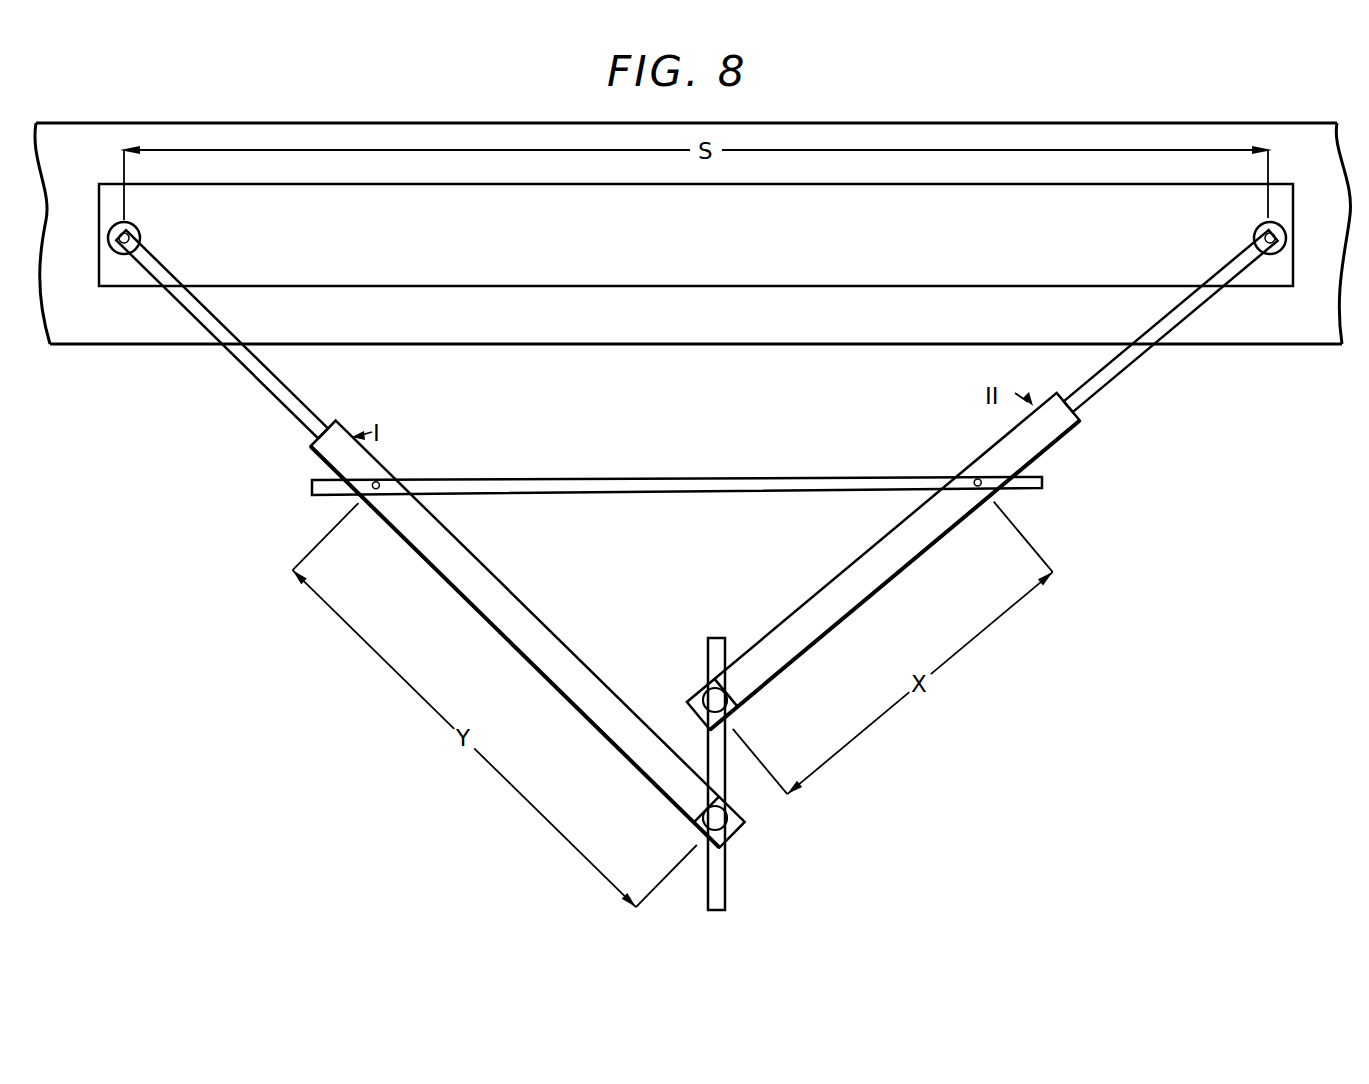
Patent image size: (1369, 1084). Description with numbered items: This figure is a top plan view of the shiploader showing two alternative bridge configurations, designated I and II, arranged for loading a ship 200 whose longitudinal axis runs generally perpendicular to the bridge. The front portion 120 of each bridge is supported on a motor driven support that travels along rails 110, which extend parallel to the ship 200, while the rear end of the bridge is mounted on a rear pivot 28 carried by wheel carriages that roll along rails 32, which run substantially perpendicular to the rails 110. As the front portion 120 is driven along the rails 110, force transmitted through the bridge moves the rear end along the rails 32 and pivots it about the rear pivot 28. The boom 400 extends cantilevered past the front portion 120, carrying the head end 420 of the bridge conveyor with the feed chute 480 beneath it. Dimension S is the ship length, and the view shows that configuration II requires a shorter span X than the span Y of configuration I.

The rear pivot 28 is at (727, 716).
The rails 32 is at (727, 882).
The rails 110 is at (772, 479).
The front portion 120 is at (322, 453).
The ship 200 is at (696, 340).
The boom 400 is at (228, 332).
The head end 420 is at (133, 254).
The feed chute 480 is at (138, 225).